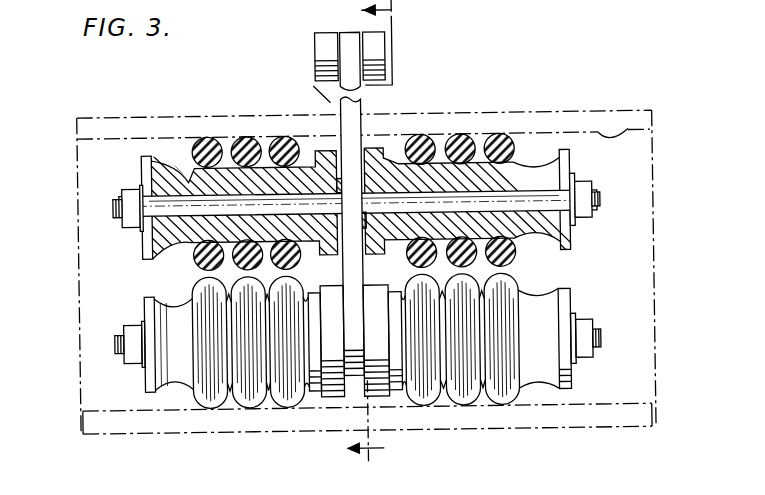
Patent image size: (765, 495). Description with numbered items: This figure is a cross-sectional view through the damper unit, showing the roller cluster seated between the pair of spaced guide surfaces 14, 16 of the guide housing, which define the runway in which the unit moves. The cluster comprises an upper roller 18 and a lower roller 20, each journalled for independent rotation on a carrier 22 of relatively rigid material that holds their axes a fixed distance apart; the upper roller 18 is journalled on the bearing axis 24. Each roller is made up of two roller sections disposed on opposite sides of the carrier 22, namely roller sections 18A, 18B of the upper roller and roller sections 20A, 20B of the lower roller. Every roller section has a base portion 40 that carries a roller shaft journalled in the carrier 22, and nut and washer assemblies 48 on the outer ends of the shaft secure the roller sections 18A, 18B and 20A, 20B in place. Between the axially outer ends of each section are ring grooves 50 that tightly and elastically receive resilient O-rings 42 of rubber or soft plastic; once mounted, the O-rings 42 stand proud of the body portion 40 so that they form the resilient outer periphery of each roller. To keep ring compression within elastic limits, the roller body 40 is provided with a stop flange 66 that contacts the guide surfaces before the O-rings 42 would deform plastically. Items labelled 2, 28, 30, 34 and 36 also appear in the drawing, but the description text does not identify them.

The section line 2- 2 is at (358, 237).
The guide surface 14 is at (634, 128).
The guide surface 16 is at (553, 393).
The roller 18 is at (324, 160).
The roller section 18A is at (244, 205).
The roller section 18B is at (462, 199).
The roller 20 is at (315, 371).
The roller section 20A is at (241, 373).
The roller section 20B is at (508, 414).
The carrier 22 is at (358, 107).
The bearing axis 24 is at (170, 192).
The spacer 28 is at (465, 133).
The roller 30 is at (294, 410).
The bracket 34 is at (316, 85).
The pulley 36 is at (381, 48).
The base portion 40 is at (568, 174).
The resilient O-ring 42 is at (249, 136).
The nut and washer assembly 48 is at (122, 228).
The ring groove 50 is at (523, 160).
The stop flange 66 is at (147, 153).